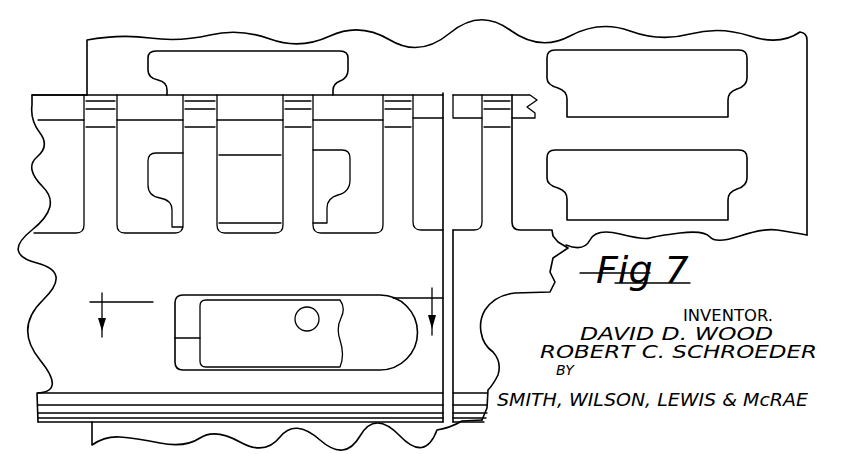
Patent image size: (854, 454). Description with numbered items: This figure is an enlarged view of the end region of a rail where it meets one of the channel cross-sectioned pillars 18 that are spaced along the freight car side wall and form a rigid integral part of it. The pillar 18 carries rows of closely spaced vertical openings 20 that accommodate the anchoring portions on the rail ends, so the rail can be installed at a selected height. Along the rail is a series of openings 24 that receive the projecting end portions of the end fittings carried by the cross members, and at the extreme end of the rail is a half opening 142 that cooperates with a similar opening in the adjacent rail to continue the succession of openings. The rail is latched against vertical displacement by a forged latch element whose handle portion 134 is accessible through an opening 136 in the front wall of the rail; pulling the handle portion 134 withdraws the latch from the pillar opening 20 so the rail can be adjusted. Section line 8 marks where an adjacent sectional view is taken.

The pillar 18 is at (490, 47).
The vertical opening 20 is at (574, 83).
The opening 24 is at (374, 167).
The half opening 142 is at (426, 228).
The handle portion 134 is at (322, 350).
The opening 136 is at (380, 373).
The section line 8- 8 is at (266, 302).